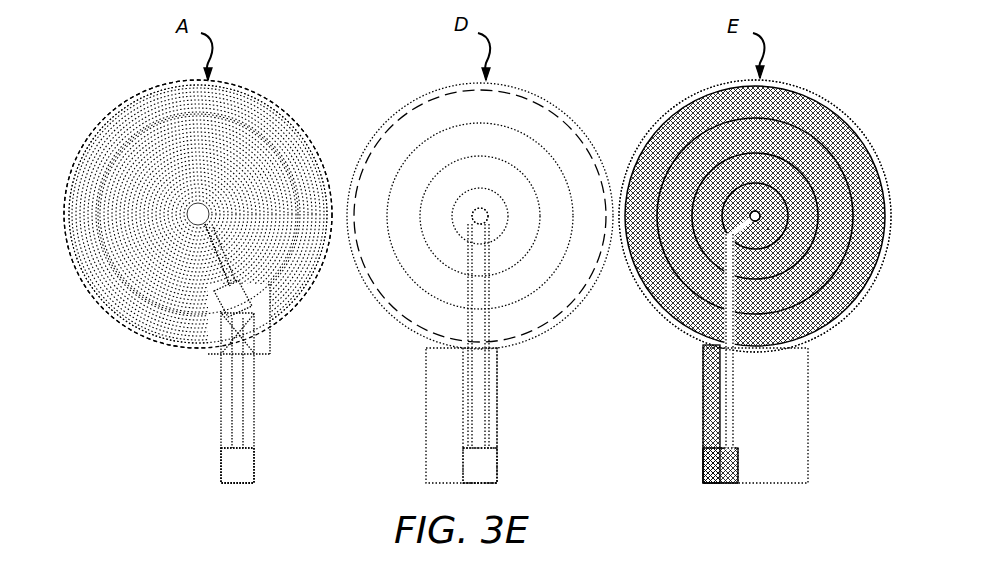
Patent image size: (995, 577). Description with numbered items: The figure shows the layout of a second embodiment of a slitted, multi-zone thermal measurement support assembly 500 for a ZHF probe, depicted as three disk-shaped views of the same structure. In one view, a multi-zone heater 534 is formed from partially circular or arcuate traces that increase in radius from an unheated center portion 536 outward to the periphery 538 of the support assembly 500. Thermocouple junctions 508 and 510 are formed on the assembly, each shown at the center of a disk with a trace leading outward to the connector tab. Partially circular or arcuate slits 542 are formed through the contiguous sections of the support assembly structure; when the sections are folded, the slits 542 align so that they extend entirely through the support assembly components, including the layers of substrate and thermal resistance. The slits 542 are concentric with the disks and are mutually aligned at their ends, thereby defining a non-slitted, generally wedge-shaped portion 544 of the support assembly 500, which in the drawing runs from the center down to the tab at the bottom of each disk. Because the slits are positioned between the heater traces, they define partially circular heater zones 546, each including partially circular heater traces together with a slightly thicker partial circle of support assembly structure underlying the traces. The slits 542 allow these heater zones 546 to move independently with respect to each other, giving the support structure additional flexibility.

The support assembly 500 is at (800, 72).
The thermocouple junction 508 is at (476, 212).
The thermocouple junction 510 is at (752, 210).
The multi-zone heater 534 is at (125, 90).
The unheated center portion 536 is at (200, 198).
The periphery 538 is at (280, 105).
The slits 542 is at (167, 230).
The wedge-shaped portion 544 is at (175, 305).
The heater zones 546 is at (173, 132).